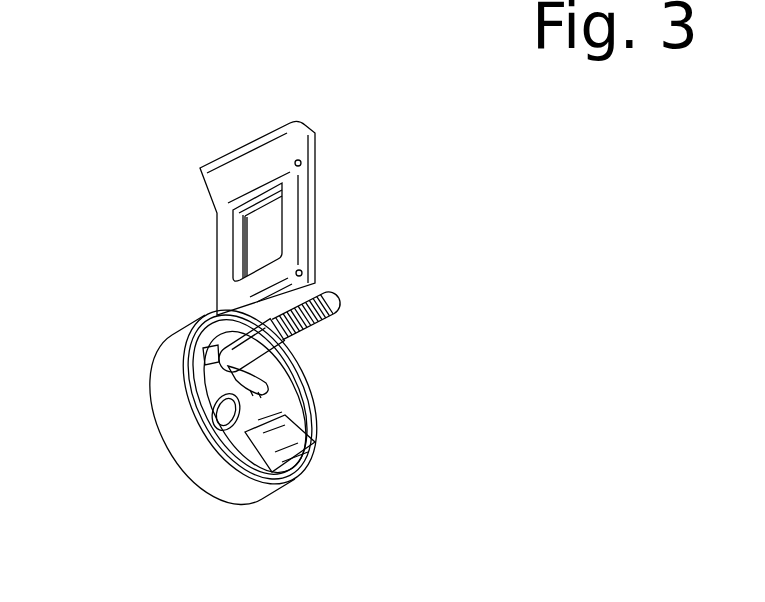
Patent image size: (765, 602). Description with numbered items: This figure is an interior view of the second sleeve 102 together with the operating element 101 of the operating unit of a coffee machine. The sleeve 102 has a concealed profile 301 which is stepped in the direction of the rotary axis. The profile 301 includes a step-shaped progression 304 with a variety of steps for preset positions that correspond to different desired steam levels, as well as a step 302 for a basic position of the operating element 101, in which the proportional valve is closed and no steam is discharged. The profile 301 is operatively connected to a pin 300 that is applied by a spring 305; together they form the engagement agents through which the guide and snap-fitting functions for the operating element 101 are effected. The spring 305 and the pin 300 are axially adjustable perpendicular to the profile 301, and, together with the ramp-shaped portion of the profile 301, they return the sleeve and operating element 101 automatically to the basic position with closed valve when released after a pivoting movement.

The operating element 101 is at (277, 152).
The second sleeve 102 is at (175, 413).
The pin 300 is at (258, 348).
The profile 301 is at (205, 325).
The step 302 is at (236, 392).
The step-shaped progression 304 is at (192, 420).
The spring 305 is at (331, 299).